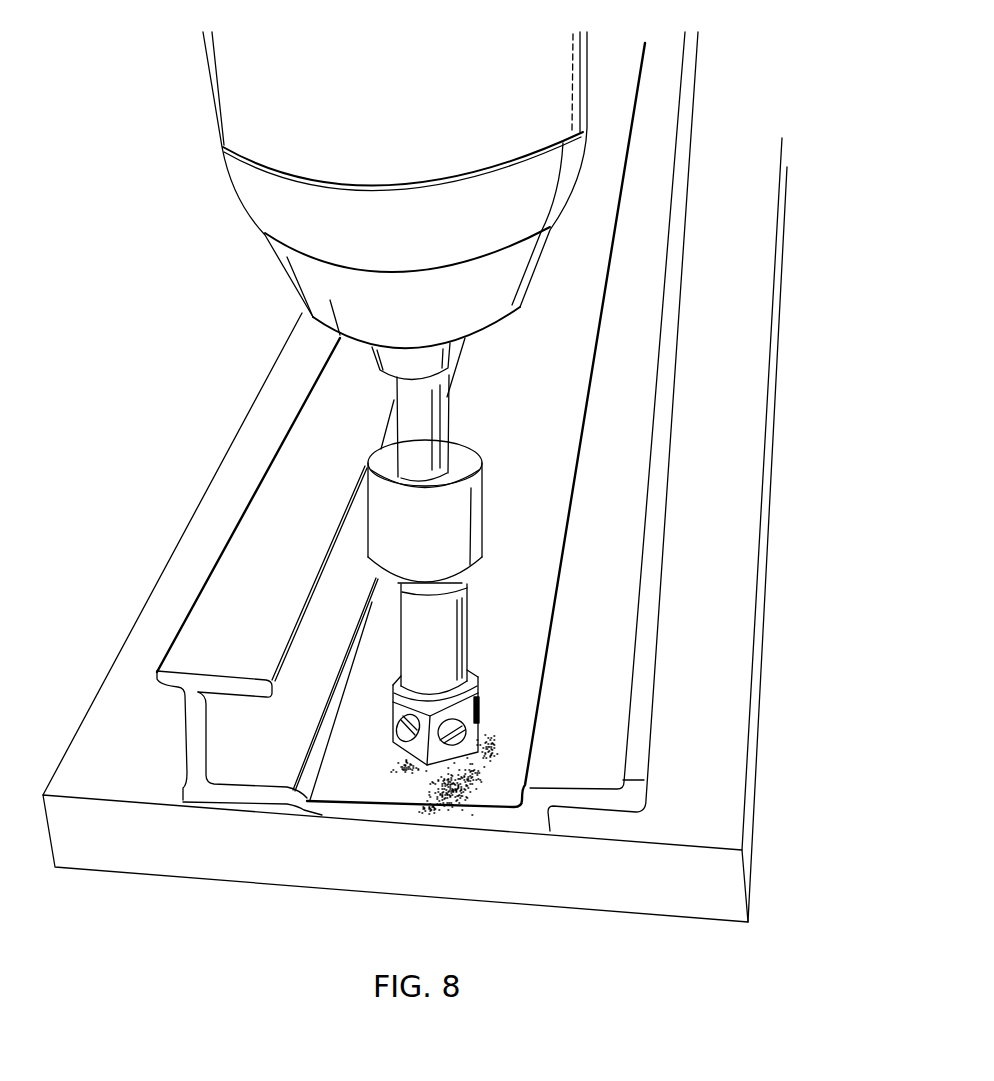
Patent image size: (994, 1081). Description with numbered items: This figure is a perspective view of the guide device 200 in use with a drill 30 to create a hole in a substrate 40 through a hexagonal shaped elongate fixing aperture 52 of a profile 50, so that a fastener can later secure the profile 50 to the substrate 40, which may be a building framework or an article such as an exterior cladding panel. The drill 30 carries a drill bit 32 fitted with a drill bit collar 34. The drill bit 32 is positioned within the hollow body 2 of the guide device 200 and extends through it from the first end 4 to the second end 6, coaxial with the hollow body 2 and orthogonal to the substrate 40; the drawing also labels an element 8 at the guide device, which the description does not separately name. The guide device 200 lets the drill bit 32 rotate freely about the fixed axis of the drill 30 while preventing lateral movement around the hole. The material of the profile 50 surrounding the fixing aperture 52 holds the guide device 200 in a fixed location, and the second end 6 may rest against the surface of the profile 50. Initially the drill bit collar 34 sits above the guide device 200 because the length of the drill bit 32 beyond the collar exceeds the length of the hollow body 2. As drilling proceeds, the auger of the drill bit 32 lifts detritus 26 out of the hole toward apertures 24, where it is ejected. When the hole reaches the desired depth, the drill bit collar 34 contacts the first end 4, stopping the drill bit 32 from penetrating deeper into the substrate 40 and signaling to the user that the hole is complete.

The hollow body 2 is at (480, 675).
The first end 4 is at (433, 607).
The second end 6 is at (467, 743).
The tool head 8 is at (433, 650).
The apertures 24 is at (393, 742).
The detritus 26 is at (460, 783).
The drill 30 is at (527, 107).
The drill bit 32 is at (430, 420).
The drill bit collar 34 is at (425, 535).
The substrate 40 is at (732, 883).
The profile 50 is at (662, 511).
The fixing aperture 52 is at (428, 771).
The guide device 200 is at (420, 758).